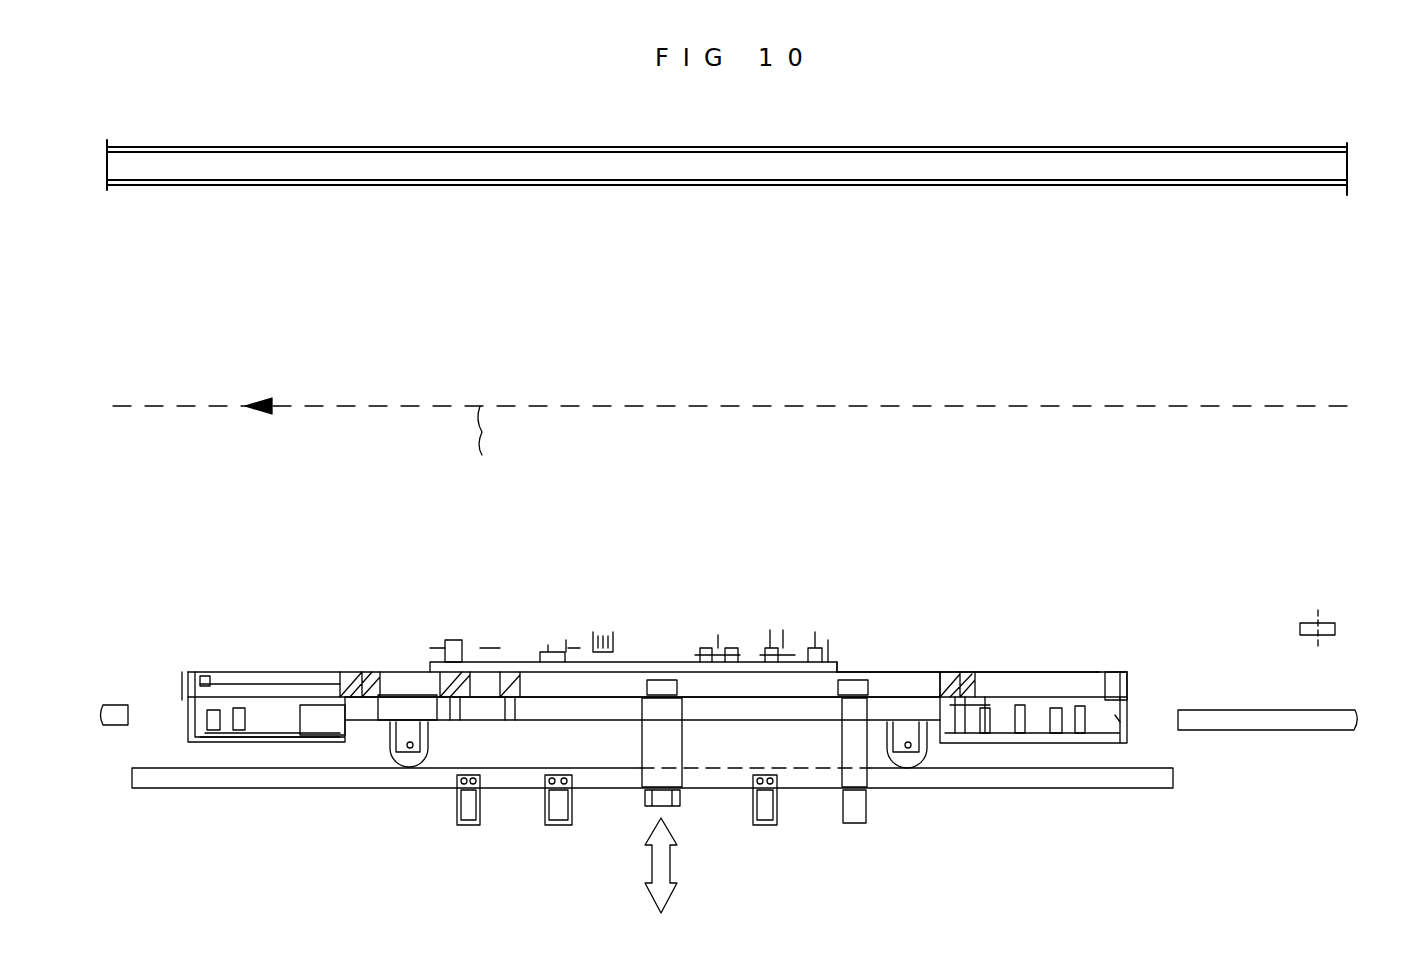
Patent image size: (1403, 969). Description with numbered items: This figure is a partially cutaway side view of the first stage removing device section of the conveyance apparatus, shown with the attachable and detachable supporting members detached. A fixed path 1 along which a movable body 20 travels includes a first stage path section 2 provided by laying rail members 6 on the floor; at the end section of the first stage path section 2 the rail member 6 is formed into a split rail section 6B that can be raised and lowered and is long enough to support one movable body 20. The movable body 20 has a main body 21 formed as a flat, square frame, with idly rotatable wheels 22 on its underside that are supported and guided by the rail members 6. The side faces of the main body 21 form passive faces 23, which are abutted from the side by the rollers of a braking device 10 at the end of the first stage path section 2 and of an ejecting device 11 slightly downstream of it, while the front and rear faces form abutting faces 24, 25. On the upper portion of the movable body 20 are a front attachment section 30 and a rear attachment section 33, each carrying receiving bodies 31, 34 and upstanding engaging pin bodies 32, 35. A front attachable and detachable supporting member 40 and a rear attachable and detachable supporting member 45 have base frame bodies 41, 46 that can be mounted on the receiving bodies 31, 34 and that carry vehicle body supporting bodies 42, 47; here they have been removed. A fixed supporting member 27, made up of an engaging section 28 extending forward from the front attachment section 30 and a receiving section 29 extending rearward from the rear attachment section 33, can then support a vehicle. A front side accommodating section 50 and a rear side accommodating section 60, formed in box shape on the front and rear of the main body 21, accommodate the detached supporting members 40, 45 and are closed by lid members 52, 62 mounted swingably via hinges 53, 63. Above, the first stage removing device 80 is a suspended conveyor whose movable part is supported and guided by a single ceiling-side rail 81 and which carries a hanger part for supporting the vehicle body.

The fixed path 1 is at (325, 403).
The first stage path section 2 is at (435, 402).
The rail member 6 is at (1265, 718).
The split rail section 6B is at (280, 778).
The braking device 10 is at (1330, 590).
The ejecting device 11 is at (855, 655).
The movable body 20 is at (1090, 630).
The main body 21 is at (737, 705).
The wheels 22 is at (910, 760).
The passive faces 23 is at (920, 680).
The abutting face 24 is at (183, 672).
The abutting face 25 is at (1140, 677).
The fixed supporting member 27 is at (413, 645).
The engaging section 28 is at (490, 655).
The receiving section 29 is at (883, 670).
The front attachment section 30 is at (548, 652).
The receiving body 31 is at (615, 655).
The engaging pin body 32 is at (566, 652).
The rear attachment section 33 is at (713, 648).
The receiving body 34 is at (815, 655).
The engaging pin body 35 is at (775, 655).
The front attachable and detachable supporting member 40 is at (258, 693).
The base frame body 41 is at (257, 747).
The vehicle body supporting body 42 is at (338, 664).
The rear attachable and detachable supporting member 45 is at (1002, 740).
The base frame body 46 is at (1028, 740).
The vehicle body supporting body 47 is at (1085, 752).
The front side accommodating section 50 is at (297, 703).
The lid member 52 is at (248, 663).
The hinge 53 is at (218, 668).
The rear side accommodating section 60 is at (1120, 718).
The lid member 62 is at (1012, 672).
The hinge 63 is at (1122, 672).
The first stage removing device 80 is at (870, 146).
The ceiling-side rail 81 is at (790, 165).